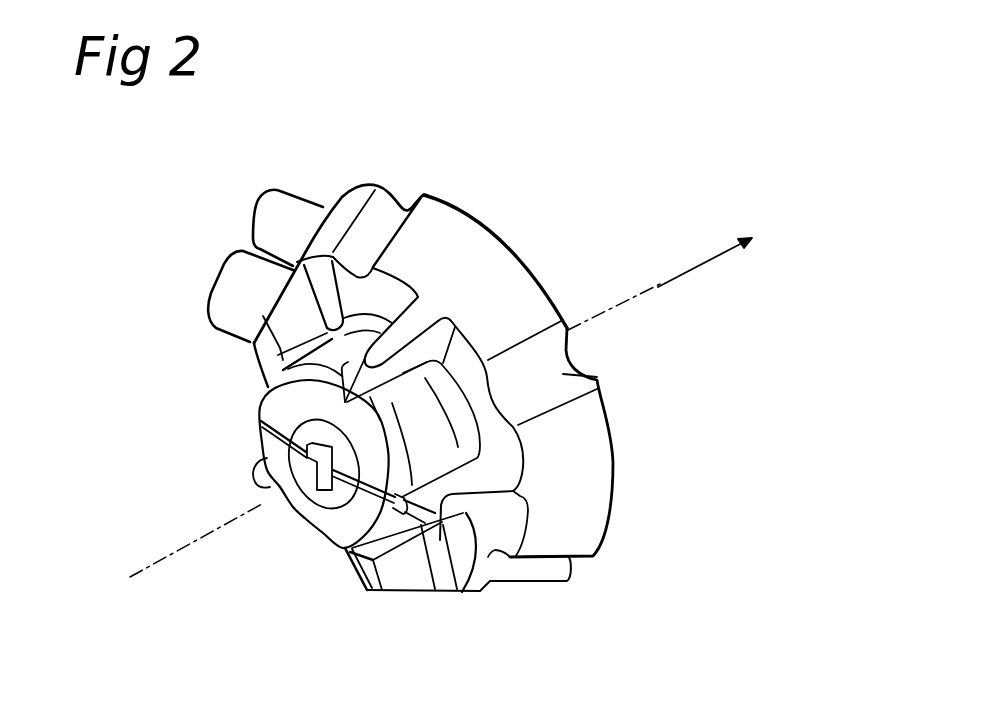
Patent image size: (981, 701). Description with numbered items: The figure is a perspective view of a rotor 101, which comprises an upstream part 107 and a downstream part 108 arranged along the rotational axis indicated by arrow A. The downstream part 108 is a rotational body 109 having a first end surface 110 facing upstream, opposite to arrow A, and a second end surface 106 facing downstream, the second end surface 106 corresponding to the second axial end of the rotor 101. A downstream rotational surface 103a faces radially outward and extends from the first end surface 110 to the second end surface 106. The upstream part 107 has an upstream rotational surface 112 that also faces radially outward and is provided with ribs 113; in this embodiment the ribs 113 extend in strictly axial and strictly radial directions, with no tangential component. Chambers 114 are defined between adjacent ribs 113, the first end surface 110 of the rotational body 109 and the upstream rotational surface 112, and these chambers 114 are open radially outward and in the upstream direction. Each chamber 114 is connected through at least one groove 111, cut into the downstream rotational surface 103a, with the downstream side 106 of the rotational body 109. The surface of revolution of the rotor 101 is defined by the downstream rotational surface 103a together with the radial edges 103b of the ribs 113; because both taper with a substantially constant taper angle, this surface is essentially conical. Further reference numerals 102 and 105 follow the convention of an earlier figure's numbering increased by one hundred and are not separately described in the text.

The rotor 101 is at (407, 180).
The central axis 102 is at (613, 307).
The downstream rotational surface 103a is at (495, 255).
The radial edges of the ribs 103b is at (462, 590).
The hub 105 is at (315, 512).
The second end surface 106 is at (618, 424).
The upstream part 107 is at (214, 283).
The downstream part 108 is at (258, 204).
The rotational body 109 is at (587, 533).
The first end surface 110 is at (503, 457).
The groove 111 is at (597, 378).
The upstream rotational surface 112 is at (420, 448).
The ribs 113 is at (270, 390).
The chambers 114 is at (352, 553).